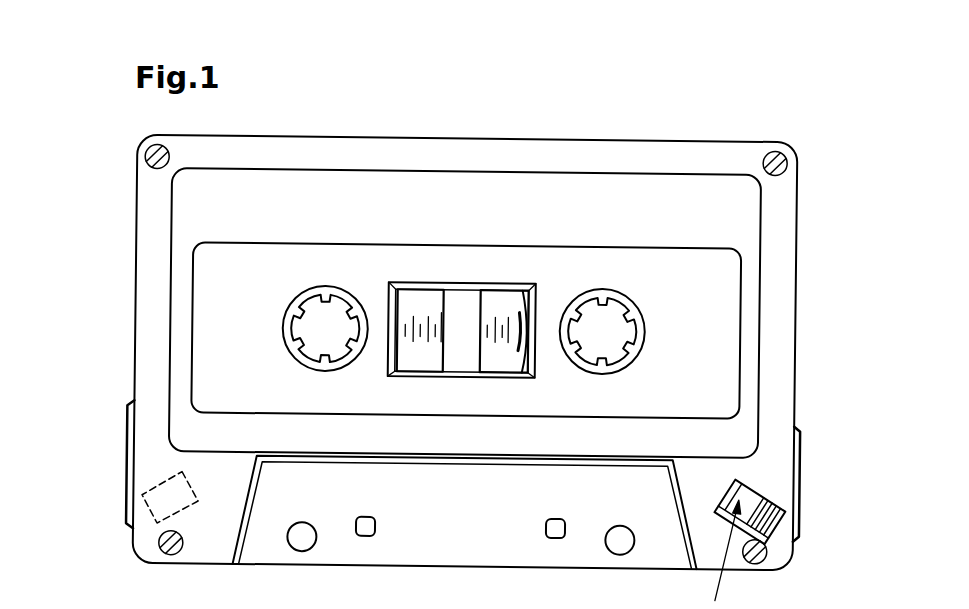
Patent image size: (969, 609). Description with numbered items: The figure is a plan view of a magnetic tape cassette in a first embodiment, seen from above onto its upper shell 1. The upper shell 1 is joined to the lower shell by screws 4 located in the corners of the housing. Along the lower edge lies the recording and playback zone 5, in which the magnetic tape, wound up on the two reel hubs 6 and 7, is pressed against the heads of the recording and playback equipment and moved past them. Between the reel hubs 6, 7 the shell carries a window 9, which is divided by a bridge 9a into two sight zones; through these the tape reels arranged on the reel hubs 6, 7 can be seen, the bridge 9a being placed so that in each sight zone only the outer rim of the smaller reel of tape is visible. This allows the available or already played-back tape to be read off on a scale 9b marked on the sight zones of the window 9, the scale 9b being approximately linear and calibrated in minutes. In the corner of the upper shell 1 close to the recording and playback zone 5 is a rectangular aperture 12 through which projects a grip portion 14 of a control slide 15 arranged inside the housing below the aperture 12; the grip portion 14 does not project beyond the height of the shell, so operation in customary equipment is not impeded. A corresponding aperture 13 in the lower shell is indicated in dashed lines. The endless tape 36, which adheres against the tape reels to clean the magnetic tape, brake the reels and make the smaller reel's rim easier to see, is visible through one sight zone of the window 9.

The upper shell 1 is at (459, 150).
The screws 4 is at (766, 155).
The recording and playback zone 5 is at (465, 567).
The reel hub 6 is at (616, 302).
The reel hub 7 is at (306, 291).
The window 9 is at (468, 309).
The bridge 9a is at (455, 363).
The scale 9b is at (500, 355).
The rectangular aperture 12 is at (781, 505).
The rectangular aperture 13 is at (162, 489).
The grip portion 14 is at (762, 491).
The control slide 15 is at (721, 554).
The endless tape 36 is at (521, 367).